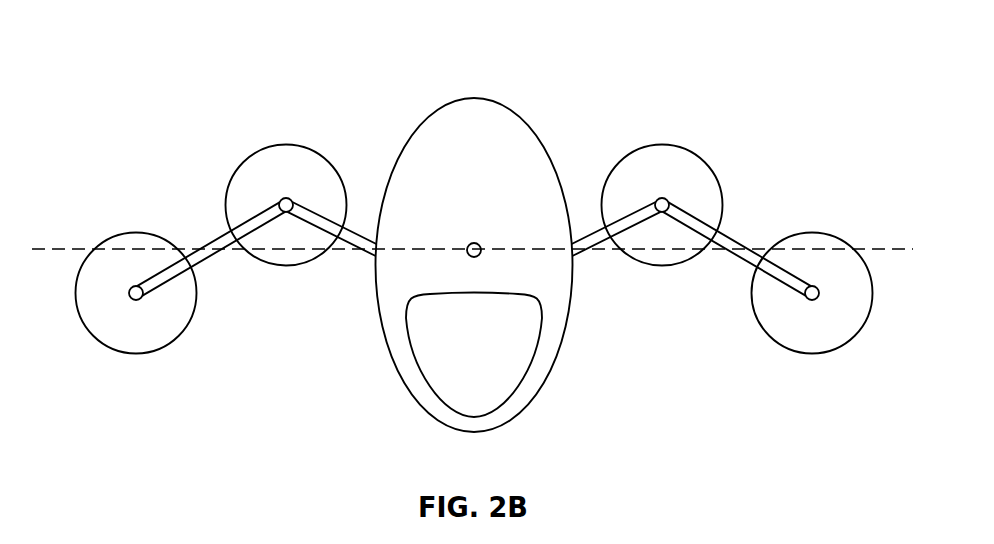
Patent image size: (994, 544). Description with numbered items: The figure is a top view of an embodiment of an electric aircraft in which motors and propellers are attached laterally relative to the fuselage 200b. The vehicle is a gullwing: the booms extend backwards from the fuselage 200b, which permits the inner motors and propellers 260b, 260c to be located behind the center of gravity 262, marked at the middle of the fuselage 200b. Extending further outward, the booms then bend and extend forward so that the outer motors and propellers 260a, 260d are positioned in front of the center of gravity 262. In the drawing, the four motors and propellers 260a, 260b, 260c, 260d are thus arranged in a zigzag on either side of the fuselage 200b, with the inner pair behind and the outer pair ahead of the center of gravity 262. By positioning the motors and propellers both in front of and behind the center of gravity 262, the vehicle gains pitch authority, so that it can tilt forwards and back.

The fuselage 200b is at (472, 99).
The center of gravity 262 is at (474, 243).
The outer motor and propeller 260a is at (138, 355).
The inner motor and propeller 260b is at (287, 144).
The inner motor and propeller 260c is at (677, 129).
The outer motor and propeller 260d is at (810, 355).